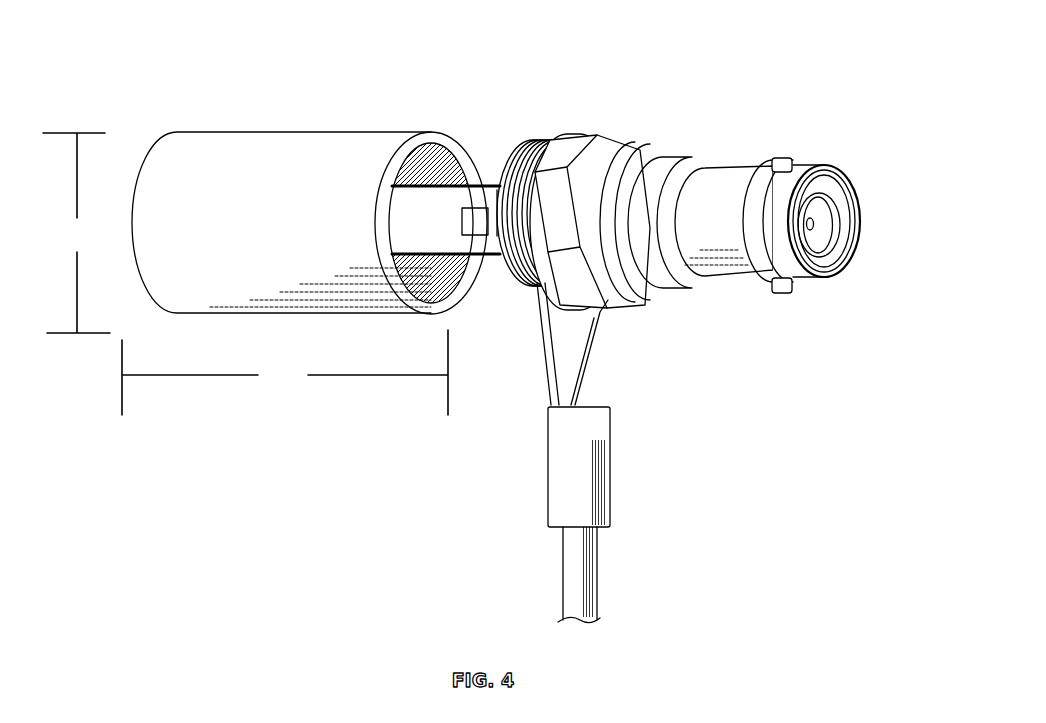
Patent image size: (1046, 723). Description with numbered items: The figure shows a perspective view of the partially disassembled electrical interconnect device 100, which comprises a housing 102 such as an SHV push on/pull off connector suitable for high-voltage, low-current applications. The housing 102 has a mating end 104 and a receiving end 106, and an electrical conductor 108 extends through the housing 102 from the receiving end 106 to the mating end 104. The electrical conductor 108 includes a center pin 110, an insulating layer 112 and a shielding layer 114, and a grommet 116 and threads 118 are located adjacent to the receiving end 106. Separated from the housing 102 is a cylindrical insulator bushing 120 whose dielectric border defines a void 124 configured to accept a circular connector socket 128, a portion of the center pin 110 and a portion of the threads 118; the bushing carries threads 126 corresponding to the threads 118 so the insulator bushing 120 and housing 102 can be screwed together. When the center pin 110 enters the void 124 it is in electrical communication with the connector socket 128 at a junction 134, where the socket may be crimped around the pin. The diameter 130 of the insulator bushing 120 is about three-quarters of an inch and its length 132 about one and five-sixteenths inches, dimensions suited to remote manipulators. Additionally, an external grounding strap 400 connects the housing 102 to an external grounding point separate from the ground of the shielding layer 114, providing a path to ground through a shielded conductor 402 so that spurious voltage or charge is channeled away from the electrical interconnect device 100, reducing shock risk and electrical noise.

The electrical interconnect device 100 is at (220, 57).
The housing 102 is at (700, 222).
The mating end 104 is at (870, 250).
The receiving end 106 is at (504, 280).
The electrical conductor 108 is at (839, 201).
The center pin 110 is at (814, 224).
The insulating layer 112 is at (820, 243).
The shielding layer 114 is at (815, 262).
The grommet 116 is at (610, 140).
The threads 118 is at (538, 142).
The insulator bushing 120 is at (281, 222).
The void 124 is at (411, 266).
The threads 126 is at (456, 278).
The connector socket 128 is at (382, 133).
The diameter 130 is at (76, 233).
The length 132 is at (285, 372).
The junction 134 is at (447, 231).
The external grounding strap 400 is at (578, 333).
The shielded conductor 402 is at (583, 568).